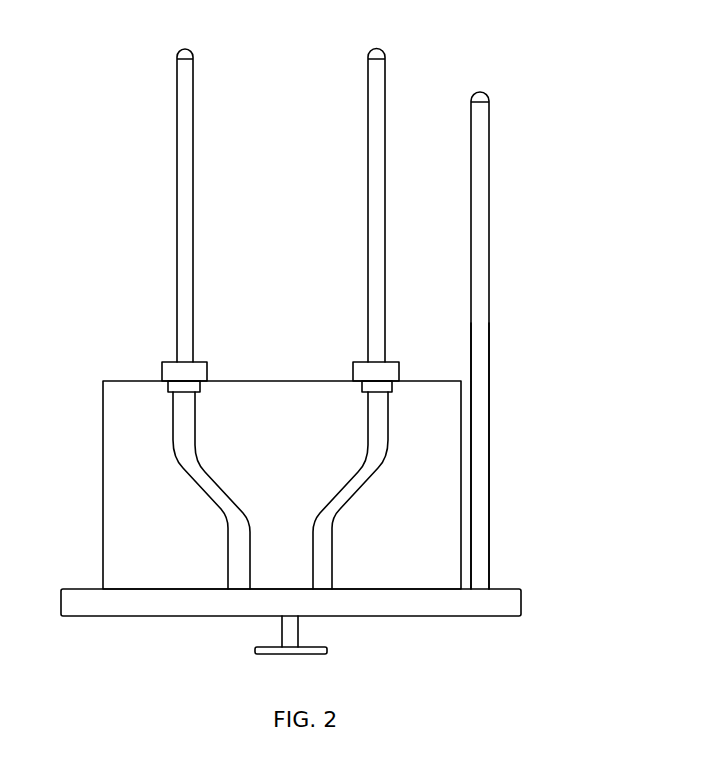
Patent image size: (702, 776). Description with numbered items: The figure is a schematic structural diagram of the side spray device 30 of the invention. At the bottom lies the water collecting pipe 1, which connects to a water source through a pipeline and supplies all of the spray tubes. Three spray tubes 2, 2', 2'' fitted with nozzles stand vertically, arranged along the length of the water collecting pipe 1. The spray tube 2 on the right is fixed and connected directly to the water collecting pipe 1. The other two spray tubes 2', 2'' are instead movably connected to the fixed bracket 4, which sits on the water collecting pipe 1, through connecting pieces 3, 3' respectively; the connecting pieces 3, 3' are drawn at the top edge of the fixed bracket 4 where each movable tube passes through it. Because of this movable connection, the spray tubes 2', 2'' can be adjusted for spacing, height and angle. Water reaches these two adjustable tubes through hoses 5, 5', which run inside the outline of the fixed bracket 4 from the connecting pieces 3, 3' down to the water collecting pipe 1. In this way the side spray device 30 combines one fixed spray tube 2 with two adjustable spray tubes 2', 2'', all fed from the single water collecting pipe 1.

The water collecting pipe 1 is at (499, 609).
The spray tube 2 is at (516, 340).
The spray tube 2' is at (398, 206).
The spray tube 2'' is at (215, 205).
The connecting piece 3 is at (389, 344).
The connecting piece 3' is at (205, 345).
The fixed bracket 4 is at (120, 379).
The hose 5 is at (340, 490).
The hose 5' is at (187, 490).
The side spray device 30 is at (488, 323).